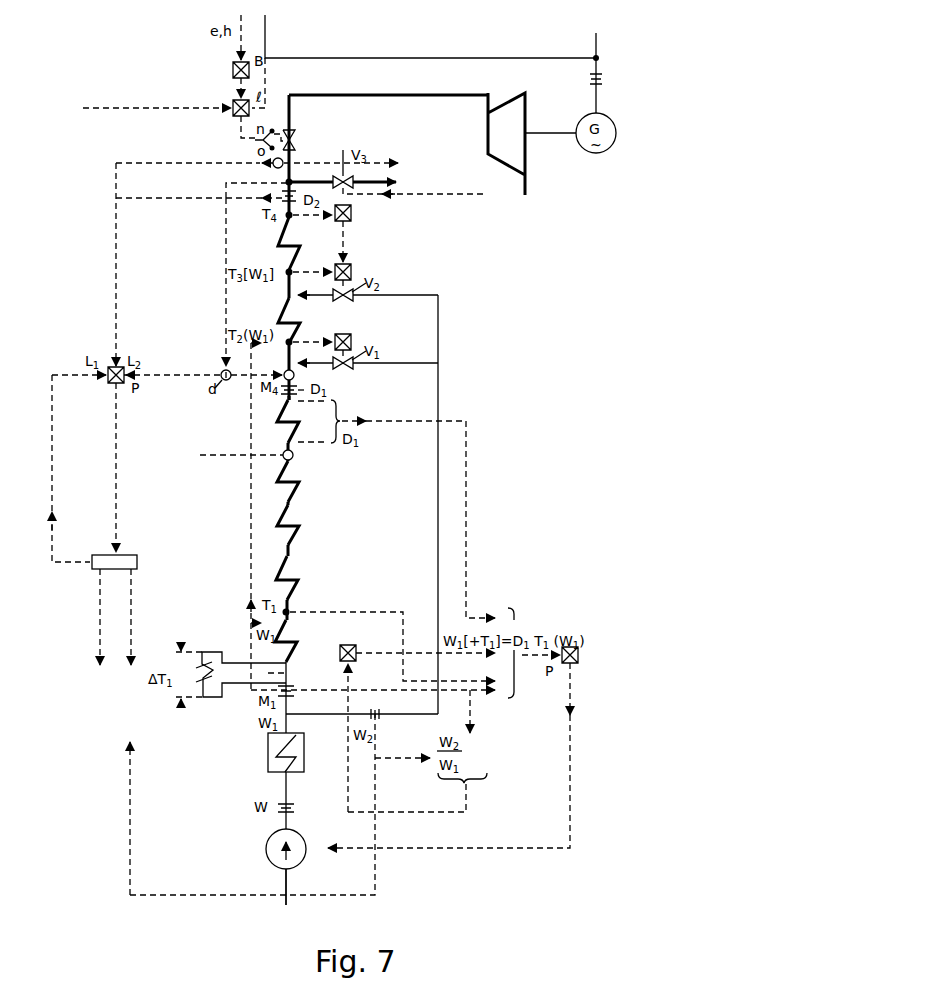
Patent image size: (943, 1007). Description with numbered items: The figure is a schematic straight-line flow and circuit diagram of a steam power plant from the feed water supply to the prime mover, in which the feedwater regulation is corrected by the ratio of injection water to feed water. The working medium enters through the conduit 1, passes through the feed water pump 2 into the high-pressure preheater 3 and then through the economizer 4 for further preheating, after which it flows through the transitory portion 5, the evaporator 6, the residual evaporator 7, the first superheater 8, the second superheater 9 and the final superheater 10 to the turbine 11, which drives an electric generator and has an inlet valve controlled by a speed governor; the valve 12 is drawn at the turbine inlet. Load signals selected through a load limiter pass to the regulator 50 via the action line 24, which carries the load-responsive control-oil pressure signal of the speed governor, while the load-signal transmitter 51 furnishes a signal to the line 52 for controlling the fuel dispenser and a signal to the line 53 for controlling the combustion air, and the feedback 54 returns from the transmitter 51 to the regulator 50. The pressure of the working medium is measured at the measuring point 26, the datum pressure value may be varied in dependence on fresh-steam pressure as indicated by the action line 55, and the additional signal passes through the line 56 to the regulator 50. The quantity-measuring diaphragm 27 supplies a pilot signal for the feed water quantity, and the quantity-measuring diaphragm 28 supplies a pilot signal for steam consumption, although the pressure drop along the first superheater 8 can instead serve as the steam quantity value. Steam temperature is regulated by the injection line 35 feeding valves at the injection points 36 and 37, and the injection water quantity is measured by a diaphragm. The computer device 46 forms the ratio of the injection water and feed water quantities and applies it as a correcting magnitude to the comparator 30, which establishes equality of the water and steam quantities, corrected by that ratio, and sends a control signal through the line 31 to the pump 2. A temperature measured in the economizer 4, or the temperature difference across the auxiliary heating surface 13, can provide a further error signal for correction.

The conduit 1 is at (287, 880).
The feed water pump 2 is at (299, 837).
The high-pressure preheater 3 is at (297, 747).
The economizer 4 is at (290, 638).
The transitory portion 5 is at (279, 571).
The evaporator 6 is at (279, 515).
The residual evaporator 7 is at (279, 468).
The first superheater 8 is at (278, 425).
The second superheater 9 is at (283, 310).
The final superheater 10 is at (283, 238).
The turbine 11 is at (518, 113).
The valve 12 is at (293, 135).
The auxiliary heating surface 13 is at (206, 672).
The action line 24 is at (172, 165).
The measuring point 26 is at (295, 375).
The quantity-measuring diaphragm 27 is at (292, 689).
The quantity-measuring diaphragm 28 is at (281, 402).
The comparator 30 is at (578, 655).
The line 31 is at (570, 770).
The injection line 35 is at (438, 372).
The injection point 36 is at (291, 360).
The injection point 37 is at (296, 299).
The computer device 46 is at (348, 645).
The regulator 50 is at (108, 381).
The load-signal transmitter 51 is at (125, 558).
The line 52 is at (131, 595).
The line 53 is at (100, 595).
The feedback 54 is at (52, 428).
The action line 55 is at (226, 238).
The line 56 is at (193, 381).